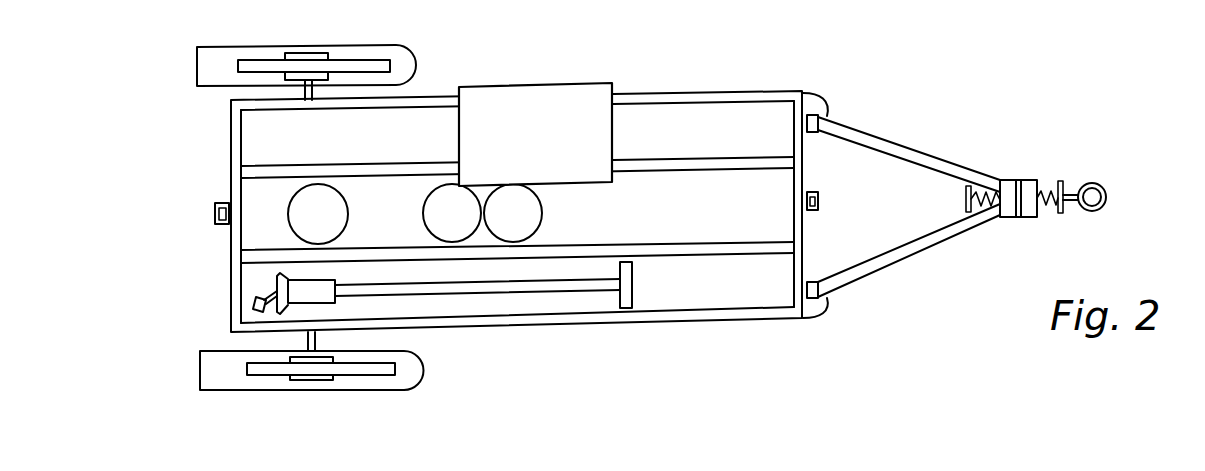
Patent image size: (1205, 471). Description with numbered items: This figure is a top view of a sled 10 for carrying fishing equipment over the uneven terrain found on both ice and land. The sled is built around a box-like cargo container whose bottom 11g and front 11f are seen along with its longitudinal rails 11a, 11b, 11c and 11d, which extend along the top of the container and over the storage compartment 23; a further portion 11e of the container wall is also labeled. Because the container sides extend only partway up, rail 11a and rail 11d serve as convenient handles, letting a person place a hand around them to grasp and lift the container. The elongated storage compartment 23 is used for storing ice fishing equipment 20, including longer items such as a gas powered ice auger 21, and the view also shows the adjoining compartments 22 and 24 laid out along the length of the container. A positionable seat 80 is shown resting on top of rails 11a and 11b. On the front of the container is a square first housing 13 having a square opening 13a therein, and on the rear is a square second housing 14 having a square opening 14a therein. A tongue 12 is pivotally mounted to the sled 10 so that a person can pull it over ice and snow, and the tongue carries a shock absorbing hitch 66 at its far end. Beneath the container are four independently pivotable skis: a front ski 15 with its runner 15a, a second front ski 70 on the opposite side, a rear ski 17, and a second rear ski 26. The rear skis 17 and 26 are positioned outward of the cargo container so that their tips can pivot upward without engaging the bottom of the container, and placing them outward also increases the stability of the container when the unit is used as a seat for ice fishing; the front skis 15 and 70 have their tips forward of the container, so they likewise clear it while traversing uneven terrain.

The sled 10 is at (668, 48).
The rail 11a is at (698, 92).
The rail 11b is at (620, 157).
The rail 11c is at (645, 247).
The rail 11d is at (645, 317).
The left frame rail 11e is at (236, 288).
The front 11f is at (823, 303).
The bottom 11g is at (718, 302).
The tongue 12 is at (957, 232).
The square first housing 13 is at (819, 199).
The square opening 13a is at (810, 192).
The square second housing 14 is at (215, 217).
The square opening 14a is at (222, 203).
The front ski 15 is at (830, 298).
The runner 15a is at (812, 320).
The rear ski 17 is at (232, 403).
The ice fishing equipment 20 is at (442, 198).
The gas powered ice auger 21 is at (525, 287).
The first compartment 22 is at (770, 135).
The storage compartment 23 is at (771, 202).
The third compartment 24 is at (775, 286).
The second rear ski 26 is at (220, 46).
The hitch coupler 66 is at (1088, 158).
The second front ski 70 is at (826, 96).
The positionable seat 80 is at (487, 100).